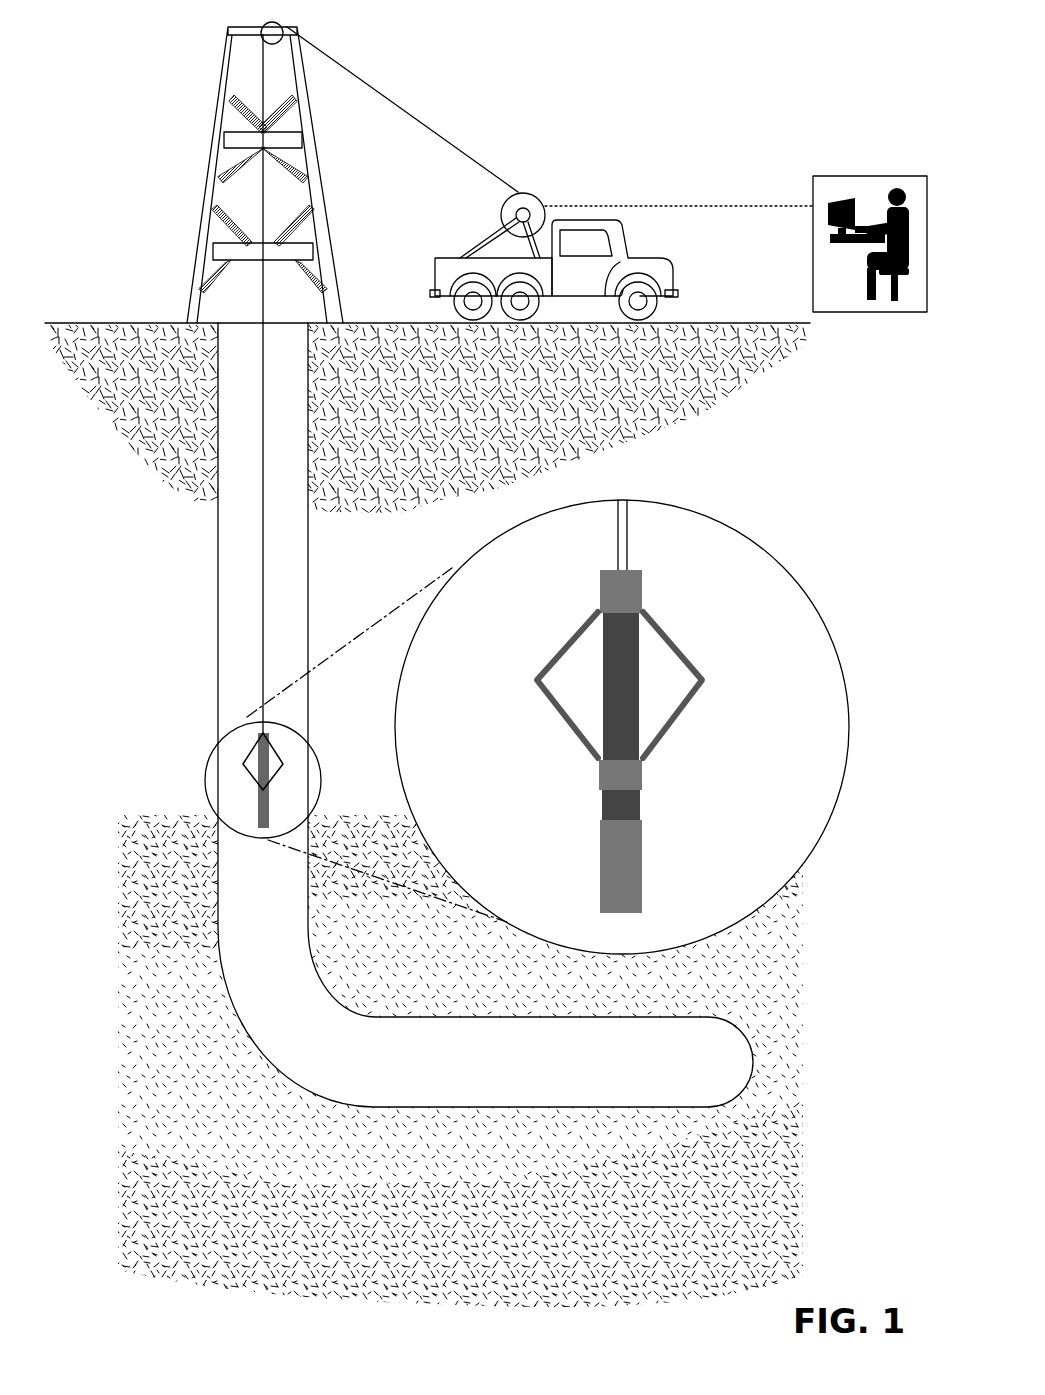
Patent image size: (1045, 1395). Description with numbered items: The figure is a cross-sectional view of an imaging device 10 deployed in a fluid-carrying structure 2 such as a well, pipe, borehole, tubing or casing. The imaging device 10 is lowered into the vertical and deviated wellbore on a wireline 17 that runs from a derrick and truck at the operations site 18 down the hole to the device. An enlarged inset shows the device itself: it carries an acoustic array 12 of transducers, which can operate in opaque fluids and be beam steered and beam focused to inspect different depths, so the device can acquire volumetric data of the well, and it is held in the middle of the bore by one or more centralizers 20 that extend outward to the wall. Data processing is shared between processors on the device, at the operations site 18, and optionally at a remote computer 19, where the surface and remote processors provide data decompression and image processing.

The fluid-carrying structure 2 is at (275, 905).
The imaging device 10 is at (222, 763).
The acoustic array 12 is at (643, 863).
The wireline 17 is at (432, 128).
The operations site 18 is at (213, 125).
The remote computer 19 is at (870, 205).
The centralizers 20 is at (657, 750).